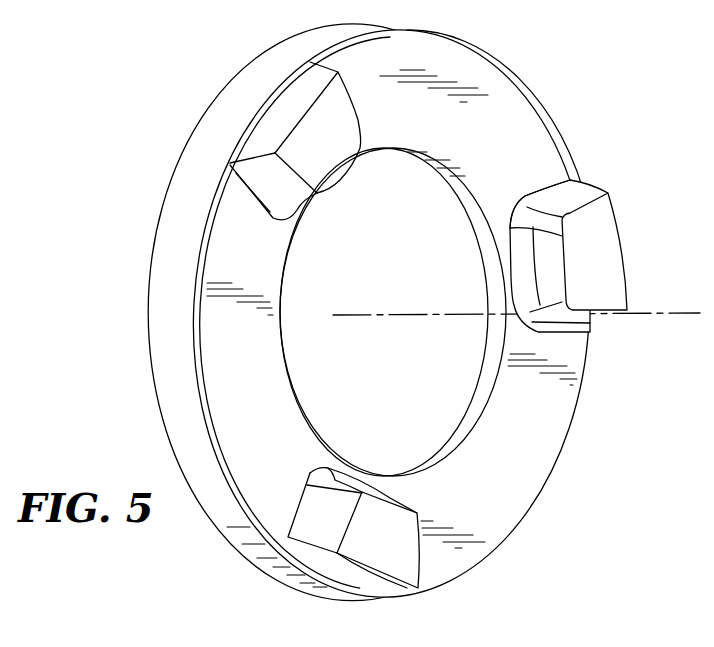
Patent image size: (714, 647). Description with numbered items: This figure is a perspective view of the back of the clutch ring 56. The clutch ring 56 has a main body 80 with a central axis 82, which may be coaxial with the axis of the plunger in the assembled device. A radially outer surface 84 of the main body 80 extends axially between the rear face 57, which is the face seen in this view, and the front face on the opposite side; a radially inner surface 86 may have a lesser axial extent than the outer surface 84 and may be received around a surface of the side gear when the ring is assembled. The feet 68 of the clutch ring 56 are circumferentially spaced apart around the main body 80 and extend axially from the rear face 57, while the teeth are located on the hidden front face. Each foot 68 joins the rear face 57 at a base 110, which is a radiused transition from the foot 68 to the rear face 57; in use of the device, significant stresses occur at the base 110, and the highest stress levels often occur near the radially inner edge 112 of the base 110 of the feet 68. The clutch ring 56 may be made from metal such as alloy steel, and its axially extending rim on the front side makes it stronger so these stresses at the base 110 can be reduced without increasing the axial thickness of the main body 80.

The clutch ring 56 is at (558, 60).
The rear face 57 is at (554, 406).
The feet 68 is at (280, 107).
The main body 80 is at (548, 130).
The central axis 82 is at (649, 313).
The radially outer surface 84 is at (296, 46).
The radially inner surface 86 is at (487, 240).
The base 110 is at (547, 177).
The radially inner edge 112 is at (515, 270).